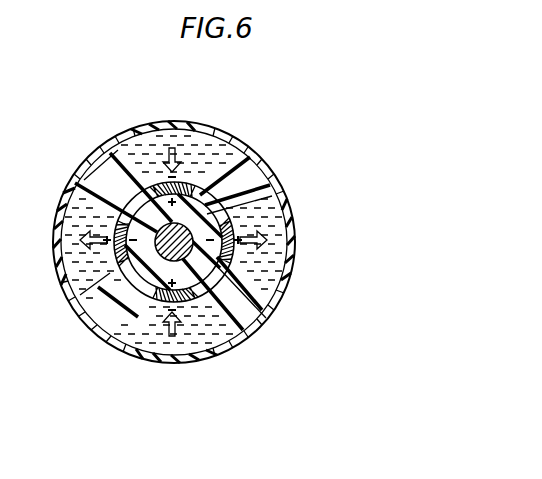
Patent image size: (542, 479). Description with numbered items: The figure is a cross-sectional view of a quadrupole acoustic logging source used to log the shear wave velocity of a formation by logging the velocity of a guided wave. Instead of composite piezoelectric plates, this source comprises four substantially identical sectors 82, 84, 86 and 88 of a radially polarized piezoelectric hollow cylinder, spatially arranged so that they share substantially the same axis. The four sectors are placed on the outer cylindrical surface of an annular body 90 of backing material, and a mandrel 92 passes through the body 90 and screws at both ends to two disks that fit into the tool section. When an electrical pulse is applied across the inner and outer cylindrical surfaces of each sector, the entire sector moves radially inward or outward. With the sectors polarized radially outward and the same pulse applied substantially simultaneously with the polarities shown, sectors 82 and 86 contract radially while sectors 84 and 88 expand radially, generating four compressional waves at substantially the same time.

The sector 82 is at (183, 200).
The sector 84 is at (110, 255).
The sector 86 is at (200, 302).
The sector 88 is at (225, 207).
The annular body of backing material 90 is at (195, 222).
The mandrel 92 is at (252, 320).